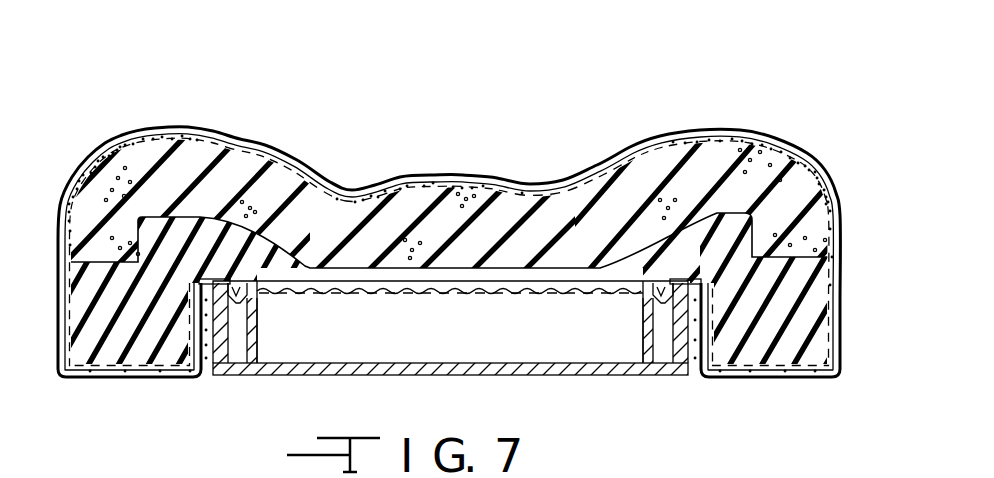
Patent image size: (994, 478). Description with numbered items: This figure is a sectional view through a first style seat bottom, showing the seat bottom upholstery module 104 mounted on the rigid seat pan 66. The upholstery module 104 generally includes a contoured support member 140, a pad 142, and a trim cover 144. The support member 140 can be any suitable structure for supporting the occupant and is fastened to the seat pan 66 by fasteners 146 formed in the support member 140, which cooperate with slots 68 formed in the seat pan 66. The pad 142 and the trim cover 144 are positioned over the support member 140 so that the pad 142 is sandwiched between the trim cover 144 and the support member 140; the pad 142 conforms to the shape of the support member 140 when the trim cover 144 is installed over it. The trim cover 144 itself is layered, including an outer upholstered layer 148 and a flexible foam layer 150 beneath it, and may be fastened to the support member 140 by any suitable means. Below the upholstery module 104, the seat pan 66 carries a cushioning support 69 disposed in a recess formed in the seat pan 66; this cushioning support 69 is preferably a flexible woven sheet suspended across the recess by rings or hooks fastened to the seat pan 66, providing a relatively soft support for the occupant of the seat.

The first style seat bottom upholstery module 104 is at (497, 223).
The contoured support member 140 is at (800, 348).
The pad 142 is at (455, 213).
The trim cover 144 is at (200, 124).
The fasteners 146 is at (232, 300).
The outer upholstered layer 148 is at (297, 157).
The flexible foam layer 150 is at (412, 203).
The seat pan 66 is at (567, 378).
The slots 68 is at (262, 292).
The cushioning support 69 is at (400, 295).